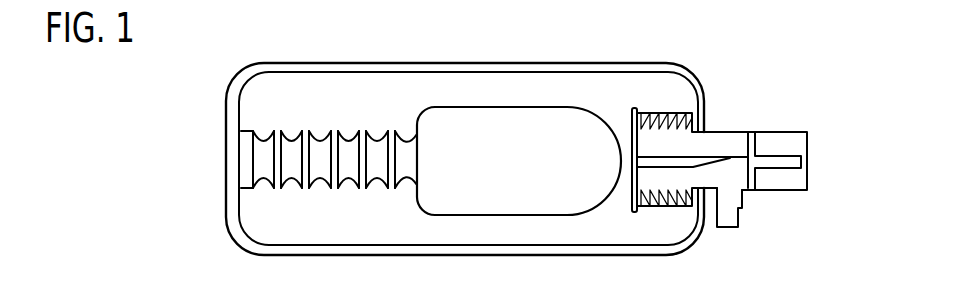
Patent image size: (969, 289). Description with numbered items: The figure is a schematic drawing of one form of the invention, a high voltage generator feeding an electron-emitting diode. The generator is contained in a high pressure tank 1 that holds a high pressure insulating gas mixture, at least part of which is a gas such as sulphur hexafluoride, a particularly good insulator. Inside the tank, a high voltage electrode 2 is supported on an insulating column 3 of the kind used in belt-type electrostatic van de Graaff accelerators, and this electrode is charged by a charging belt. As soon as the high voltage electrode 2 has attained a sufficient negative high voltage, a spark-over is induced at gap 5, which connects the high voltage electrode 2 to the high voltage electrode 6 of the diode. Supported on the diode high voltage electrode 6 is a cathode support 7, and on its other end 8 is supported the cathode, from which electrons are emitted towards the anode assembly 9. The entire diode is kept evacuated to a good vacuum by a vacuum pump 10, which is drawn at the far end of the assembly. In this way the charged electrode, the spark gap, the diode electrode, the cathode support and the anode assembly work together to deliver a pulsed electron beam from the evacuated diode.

The high pressure tank 1 is at (398, 64).
The high voltage electrode 2 is at (477, 107).
The insulating column 3 is at (335, 131).
The gap 5 is at (625, 152).
The high voltage electrode of the diode 6 is at (633, 108).
The cathode support 7 is at (677, 156).
The other end of cathode support 8 is at (743, 150).
The anode assembly 9 is at (752, 150).
The vacuum pump 10 is at (742, 214).